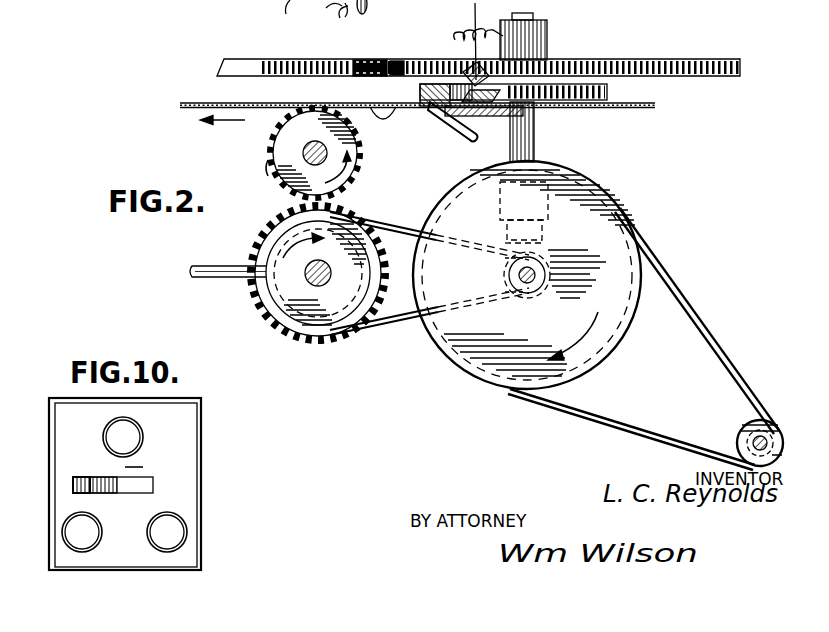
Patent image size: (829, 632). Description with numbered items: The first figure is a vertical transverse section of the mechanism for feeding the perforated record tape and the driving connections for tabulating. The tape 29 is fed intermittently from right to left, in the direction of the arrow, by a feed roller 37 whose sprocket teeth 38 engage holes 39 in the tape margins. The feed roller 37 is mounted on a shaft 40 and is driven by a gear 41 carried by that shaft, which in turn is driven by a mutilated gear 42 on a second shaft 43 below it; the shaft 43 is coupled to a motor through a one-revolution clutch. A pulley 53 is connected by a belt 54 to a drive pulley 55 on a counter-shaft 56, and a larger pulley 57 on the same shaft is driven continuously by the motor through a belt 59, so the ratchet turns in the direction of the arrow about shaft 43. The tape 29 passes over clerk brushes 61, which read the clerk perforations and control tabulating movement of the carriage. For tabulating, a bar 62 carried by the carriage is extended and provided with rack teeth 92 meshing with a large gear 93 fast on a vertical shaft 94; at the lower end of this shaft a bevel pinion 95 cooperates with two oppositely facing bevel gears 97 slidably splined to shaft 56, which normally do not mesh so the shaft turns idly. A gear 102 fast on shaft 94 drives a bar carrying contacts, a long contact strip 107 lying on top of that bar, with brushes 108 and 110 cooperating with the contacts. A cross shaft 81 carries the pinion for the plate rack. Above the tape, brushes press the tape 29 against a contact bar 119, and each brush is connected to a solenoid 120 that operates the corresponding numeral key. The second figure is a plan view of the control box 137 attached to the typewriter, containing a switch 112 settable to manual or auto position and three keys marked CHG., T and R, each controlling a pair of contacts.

In FIG. 2, the tape 29 is at (642, 100).
In FIG. 2, the feed roller 37 is at (283, 135).
In FIG. 2, the sprocket teeth 38 is at (270, 164).
In FIG. 2, the holes 39 is at (383, 124).
In FIG. 2, the shaft 40 is at (304, 155).
In FIG. 2, the gear 41 is at (264, 148).
In FIG. 2, the mutilated gear 42 is at (252, 293).
In FIG. 2, the second shaft 43 is at (303, 273).
In FIG. 2, the pulley 53 is at (304, 336).
In FIG. 2, the belt 54 is at (405, 316).
In FIG. 2, the drive pulley 55 is at (500, 278).
In FIG. 2, the counter-shaft 56 is at (552, 274).
In FIG. 2, the larger pulley 57 is at (610, 322).
In FIG. 2, the belt 59 is at (612, 423).
In FIG. 2, the clerk brushes 61 is at (440, 117).
In FIG. 2, the bar 62 is at (234, 60).
In FIG. 2, the cross shaft 81 is at (223, 266).
In FIG. 2, the rack teeth 92 is at (338, 60).
In FIG. 2, the large gear 93 is at (622, 60).
In FIG. 2, the vertical shaft 94 is at (533, 137).
In FIG. 2, the bevel pinion 95 is at (550, 243).
In FIG. 2, the bevel gears 97 is at (498, 267).
In FIG. 2, the gear 102 is at (608, 92).
In FIG. 2, the contact strip 107 is at (419, 89).
In FIG. 2, the brush 108 is at (399, 59).
In FIG. 2, the brush 110 is at (445, 54).
In FIG. 10, the switch 112 is at (92, 494).
In FIG. 2, the contact bar 119 is at (468, 116).
In FIG. 2, the solenoid 120 is at (325, 6).
In FIG. 10, the control box 137 is at (52, 498).